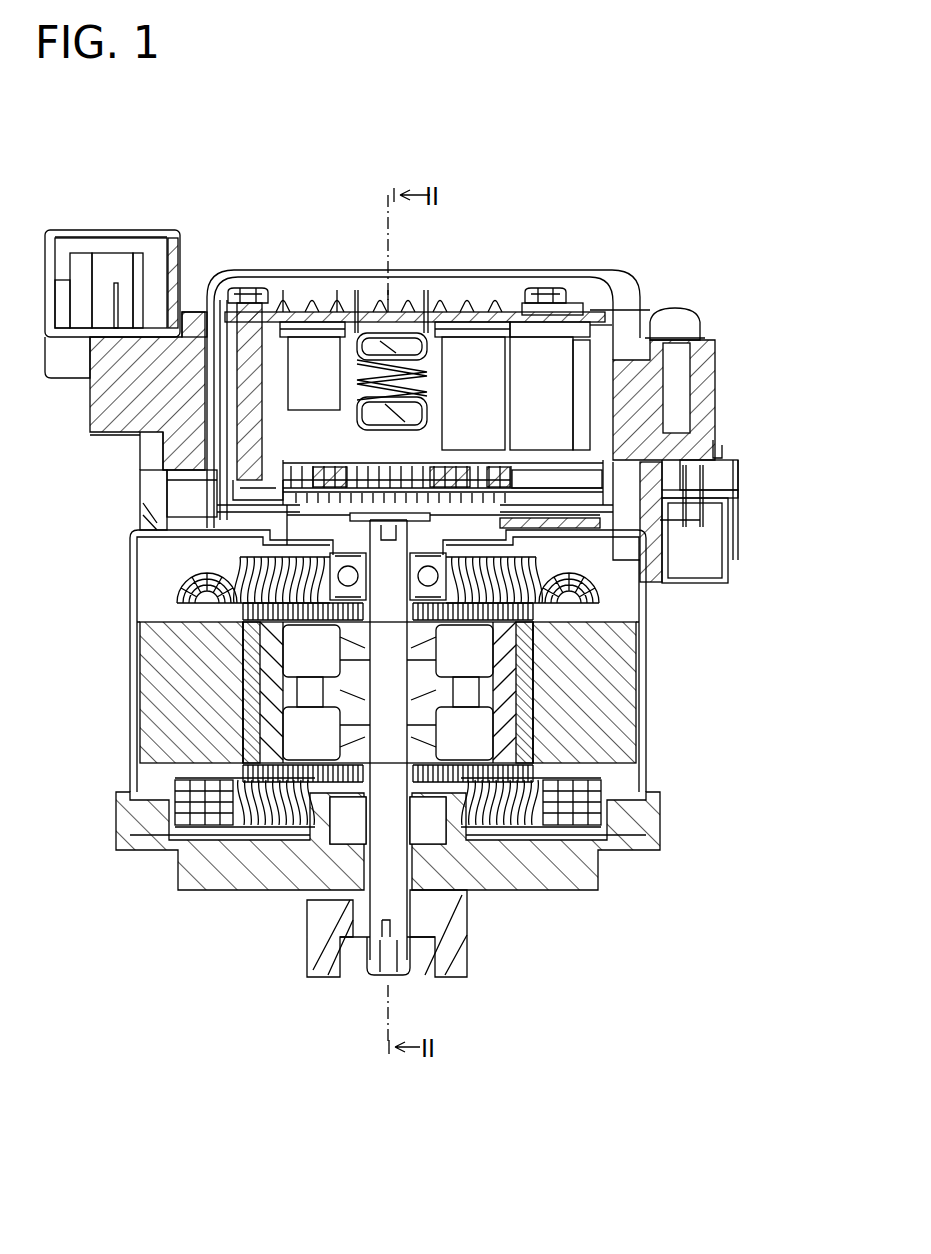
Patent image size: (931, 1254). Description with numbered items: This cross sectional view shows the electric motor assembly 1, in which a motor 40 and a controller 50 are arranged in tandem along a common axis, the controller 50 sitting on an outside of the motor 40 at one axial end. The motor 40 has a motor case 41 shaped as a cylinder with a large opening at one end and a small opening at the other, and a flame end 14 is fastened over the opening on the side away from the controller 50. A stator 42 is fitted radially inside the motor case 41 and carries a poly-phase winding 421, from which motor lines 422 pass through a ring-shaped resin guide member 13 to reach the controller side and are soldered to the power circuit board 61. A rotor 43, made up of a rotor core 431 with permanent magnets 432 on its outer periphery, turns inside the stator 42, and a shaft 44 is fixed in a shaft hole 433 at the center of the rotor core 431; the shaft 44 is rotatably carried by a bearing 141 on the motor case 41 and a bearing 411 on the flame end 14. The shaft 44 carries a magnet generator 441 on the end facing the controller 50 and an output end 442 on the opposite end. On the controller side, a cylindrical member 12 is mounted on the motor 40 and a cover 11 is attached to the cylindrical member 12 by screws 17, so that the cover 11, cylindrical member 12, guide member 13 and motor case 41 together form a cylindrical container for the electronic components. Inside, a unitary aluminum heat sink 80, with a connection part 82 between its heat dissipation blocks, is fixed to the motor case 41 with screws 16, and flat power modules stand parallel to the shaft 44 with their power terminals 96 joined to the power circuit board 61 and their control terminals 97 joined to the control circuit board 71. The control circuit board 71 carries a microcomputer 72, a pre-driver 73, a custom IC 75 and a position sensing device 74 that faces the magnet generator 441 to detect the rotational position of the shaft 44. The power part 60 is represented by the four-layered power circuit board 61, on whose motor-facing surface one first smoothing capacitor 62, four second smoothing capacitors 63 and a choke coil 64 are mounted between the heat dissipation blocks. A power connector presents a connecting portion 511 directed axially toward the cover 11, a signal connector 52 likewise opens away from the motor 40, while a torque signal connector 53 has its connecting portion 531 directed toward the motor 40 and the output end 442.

The electric motor assembly 1 is at (130, 935).
The cover 11 is at (420, 273).
The cylindrical member 12 is at (150, 447).
The guide member 13 is at (145, 520).
The flame end 14 is at (587, 875).
The screws 16 is at (247, 290).
The screws 17 is at (690, 320).
The motor 40 is at (727, 689).
The motor case 41 is at (643, 670).
The stator 42 is at (600, 647).
The winding 421 is at (187, 600).
The motor lines 422 is at (300, 533).
The rotor 43 is at (537, 697).
The rotor core 431 is at (500, 747).
The permanent magnets 432 is at (517, 718).
The shaft hole 433 is at (367, 712).
The shaft 44 is at (407, 867).
The magnet generator 441 is at (328, 613).
The output end 442 is at (460, 940).
The bearing 411 is at (355, 576).
The bearing 141 is at (358, 820).
The controller 50 is at (757, 457).
The connecting portion 511 is at (120, 232).
The signal connector 52 is at (48, 318).
The torque signal connector 53 is at (728, 482).
The connecting portion 531 is at (697, 583).
The power part 60 is at (697, 327).
The power circuit board 61 is at (600, 311).
The first smoothing capacitor 62 is at (300, 345).
The second smoothing capacitors 63 is at (457, 343).
The choke coil 64 is at (370, 343).
The control circuit board 71 is at (720, 460).
The microcomputer 72 is at (285, 447).
The pre-driver 73 is at (270, 440).
The position sensing device 74 is at (263, 498).
The custom IC 75 is at (503, 470).
The heat sink 80 is at (190, 478).
The connection part 82 is at (300, 452).
The power terminals 96 is at (285, 300).
The control terminals 97 is at (340, 457).